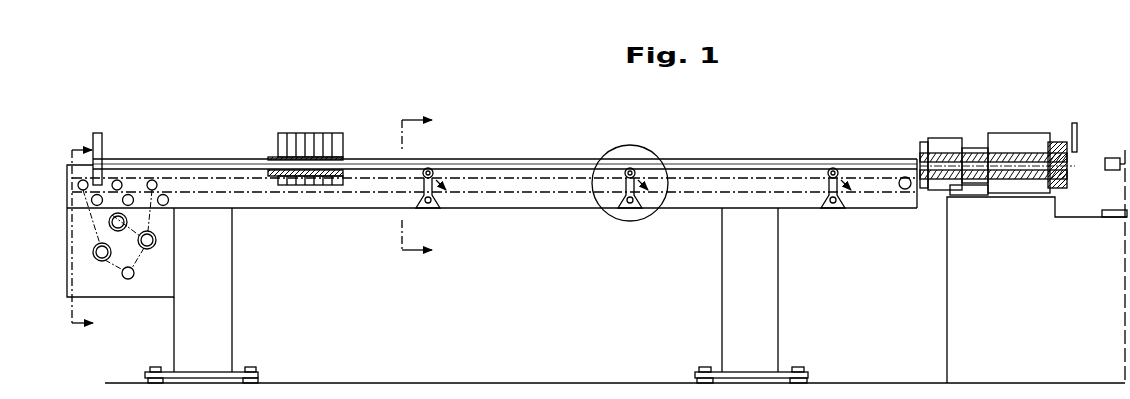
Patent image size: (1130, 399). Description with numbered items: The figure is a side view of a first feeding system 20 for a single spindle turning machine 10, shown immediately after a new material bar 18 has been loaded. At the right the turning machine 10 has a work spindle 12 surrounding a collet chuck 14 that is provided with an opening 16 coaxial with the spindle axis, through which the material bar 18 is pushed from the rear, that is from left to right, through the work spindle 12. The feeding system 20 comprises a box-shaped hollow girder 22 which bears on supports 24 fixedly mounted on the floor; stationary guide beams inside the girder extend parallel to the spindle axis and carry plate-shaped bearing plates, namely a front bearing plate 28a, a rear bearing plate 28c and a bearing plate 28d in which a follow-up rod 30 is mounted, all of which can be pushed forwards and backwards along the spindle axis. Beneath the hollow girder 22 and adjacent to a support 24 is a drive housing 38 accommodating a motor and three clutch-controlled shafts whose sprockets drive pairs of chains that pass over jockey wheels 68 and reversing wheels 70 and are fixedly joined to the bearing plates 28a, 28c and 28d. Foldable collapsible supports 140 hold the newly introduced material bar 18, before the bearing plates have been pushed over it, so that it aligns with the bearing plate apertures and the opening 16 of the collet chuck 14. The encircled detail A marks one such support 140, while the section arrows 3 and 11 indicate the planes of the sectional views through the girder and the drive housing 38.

The turning machine 10 is at (1090, 140).
The work spindle 12 is at (1069, 177).
The collet chuck 14 is at (1068, 162).
The opening 16 is at (978, 167).
The material bar 18 is at (740, 160).
The feeding system 20 is at (572, 157).
The hollow girder 22 is at (532, 211).
The supports 24 is at (223, 288).
The front bearing plate 28a is at (340, 134).
The rear bearing plate 28c is at (282, 134).
The bearing plate for the follow-up rod 28d is at (100, 134).
The follow-up rod 30 is at (223, 166).
The drive housing 38 is at (140, 300).
The jockey wheels 68 is at (129, 194).
The reversing wheels 70 is at (905, 192).
The collapsible supports 140 is at (420, 190).
The detail area A is at (644, 142).
The section line 3- 3 is at (407, 188).
The section line 11- 11 is at (77, 239).